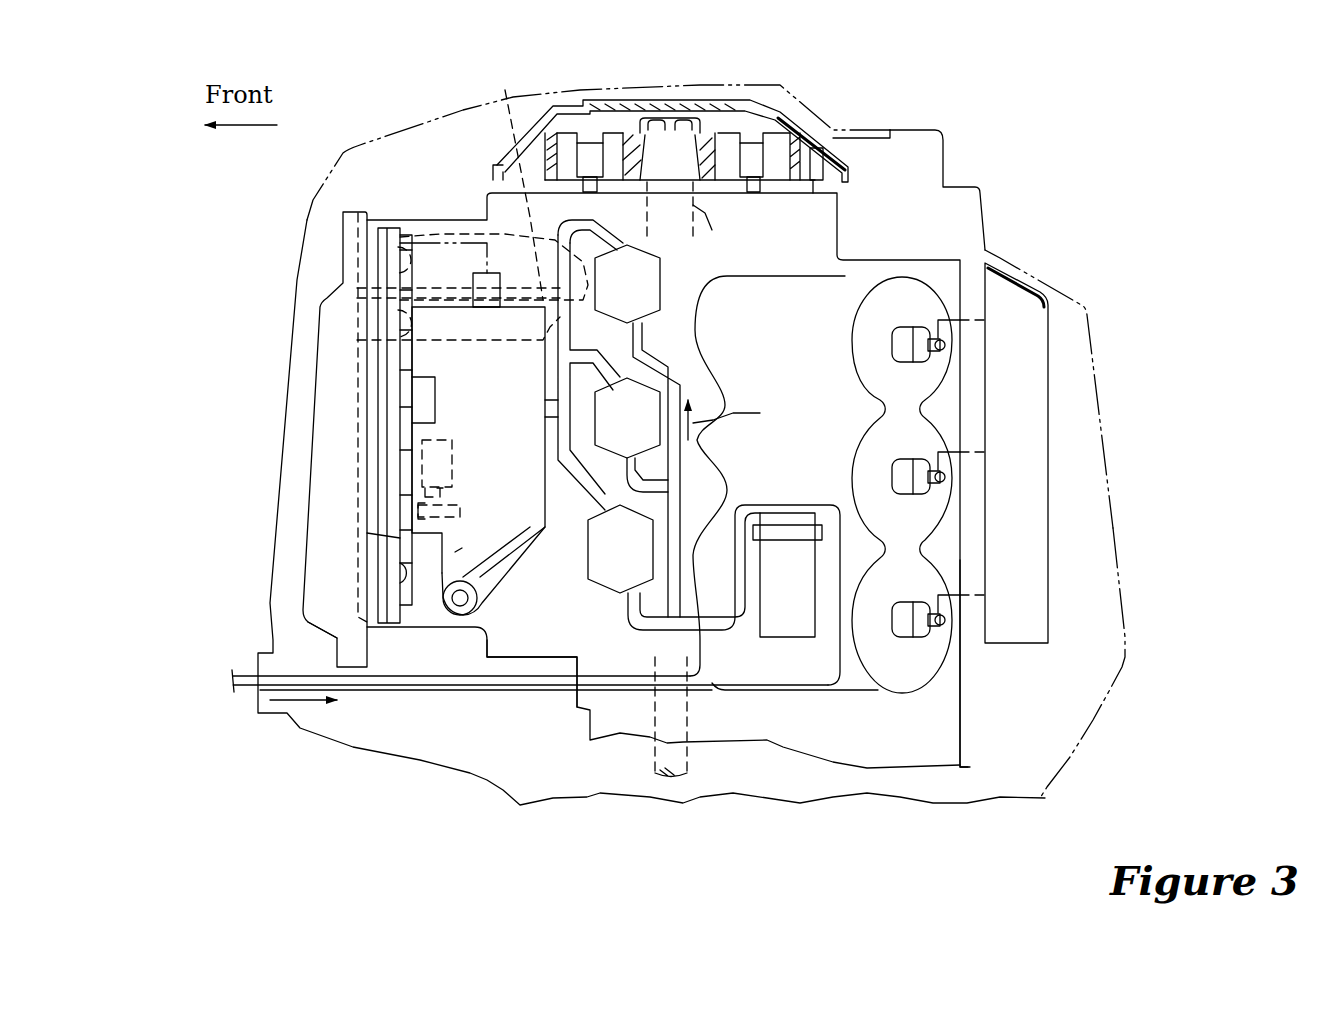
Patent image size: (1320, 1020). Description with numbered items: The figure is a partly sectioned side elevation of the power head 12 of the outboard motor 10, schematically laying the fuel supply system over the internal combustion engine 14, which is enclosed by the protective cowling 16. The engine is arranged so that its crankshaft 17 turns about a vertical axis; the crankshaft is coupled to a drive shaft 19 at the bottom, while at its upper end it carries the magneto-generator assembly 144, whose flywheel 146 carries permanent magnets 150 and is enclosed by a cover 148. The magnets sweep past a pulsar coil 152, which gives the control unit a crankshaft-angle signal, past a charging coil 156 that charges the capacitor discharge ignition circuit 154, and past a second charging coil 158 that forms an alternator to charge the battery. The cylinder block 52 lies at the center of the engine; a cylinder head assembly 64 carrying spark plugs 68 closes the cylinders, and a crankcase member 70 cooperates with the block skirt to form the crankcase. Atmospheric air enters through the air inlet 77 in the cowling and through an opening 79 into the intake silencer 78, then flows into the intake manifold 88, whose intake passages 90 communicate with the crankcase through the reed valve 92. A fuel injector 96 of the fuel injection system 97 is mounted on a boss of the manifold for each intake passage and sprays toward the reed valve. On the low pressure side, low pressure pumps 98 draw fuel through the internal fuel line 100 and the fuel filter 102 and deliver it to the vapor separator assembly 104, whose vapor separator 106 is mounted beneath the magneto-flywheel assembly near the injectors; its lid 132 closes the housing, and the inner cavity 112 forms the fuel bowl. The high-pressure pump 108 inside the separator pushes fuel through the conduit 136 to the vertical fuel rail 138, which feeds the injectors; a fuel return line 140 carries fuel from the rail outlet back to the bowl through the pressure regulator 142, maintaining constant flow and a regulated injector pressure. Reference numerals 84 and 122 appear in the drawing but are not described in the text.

The outboard motor 10 is at (1100, 242).
The power head 12 is at (1137, 313).
The internal combustion engine 14 is at (967, 217).
The protective cowling 16 is at (1113, 480).
The crankshaft 17 is at (680, 226).
The drive shaft 19 is at (667, 757).
The cylinder block 52 is at (940, 737).
The cylinder head assembly 64 is at (850, 683).
The spark plug 68 is at (897, 345).
The crankcase member 70 is at (553, 645).
The air inlet 77 is at (880, 130).
The intake silencer 78 is at (333, 330).
The opening 79 is at (357, 452).
The stator plate 84 is at (357, 287).
The intake manifold 88 is at (460, 622).
The intake passage 90 is at (415, 233).
The reed valve 92 is at (509, 178).
The fuel injector 96 is at (403, 262).
The fuel injection system 97 is at (378, 577).
The low pressure pump 98 is at (643, 297).
The internal fuel line 100 is at (367, 692).
The fuel filter 102 is at (805, 599).
The vapor separator assembly 104 is at (455, 552).
The vapor separator 106 is at (548, 545).
The high-pressure pump 108 is at (460, 450).
The inner cavity (fuel bowl) 112 is at (530, 470).
The fuel rail 122 is at (600, 490).
The lid 132 is at (455, 460).
The conduit 136 is at (367, 533).
The fuel rail 138 is at (400, 393).
The fuel return line 140 is at (483, 235).
The pressure regulator 142 is at (487, 307).
The magneto-generator assembly 144 is at (712, 150).
The flywheel 146 is at (815, 125).
The cover 148 is at (850, 167).
The permanent magnet 150 is at (590, 160).
The pulsar coil 152 is at (828, 173).
The capacitor discharge ignition circuit 154 is at (1037, 390).
The charging coil 156 is at (735, 113).
The charging coil 158 is at (630, 98).